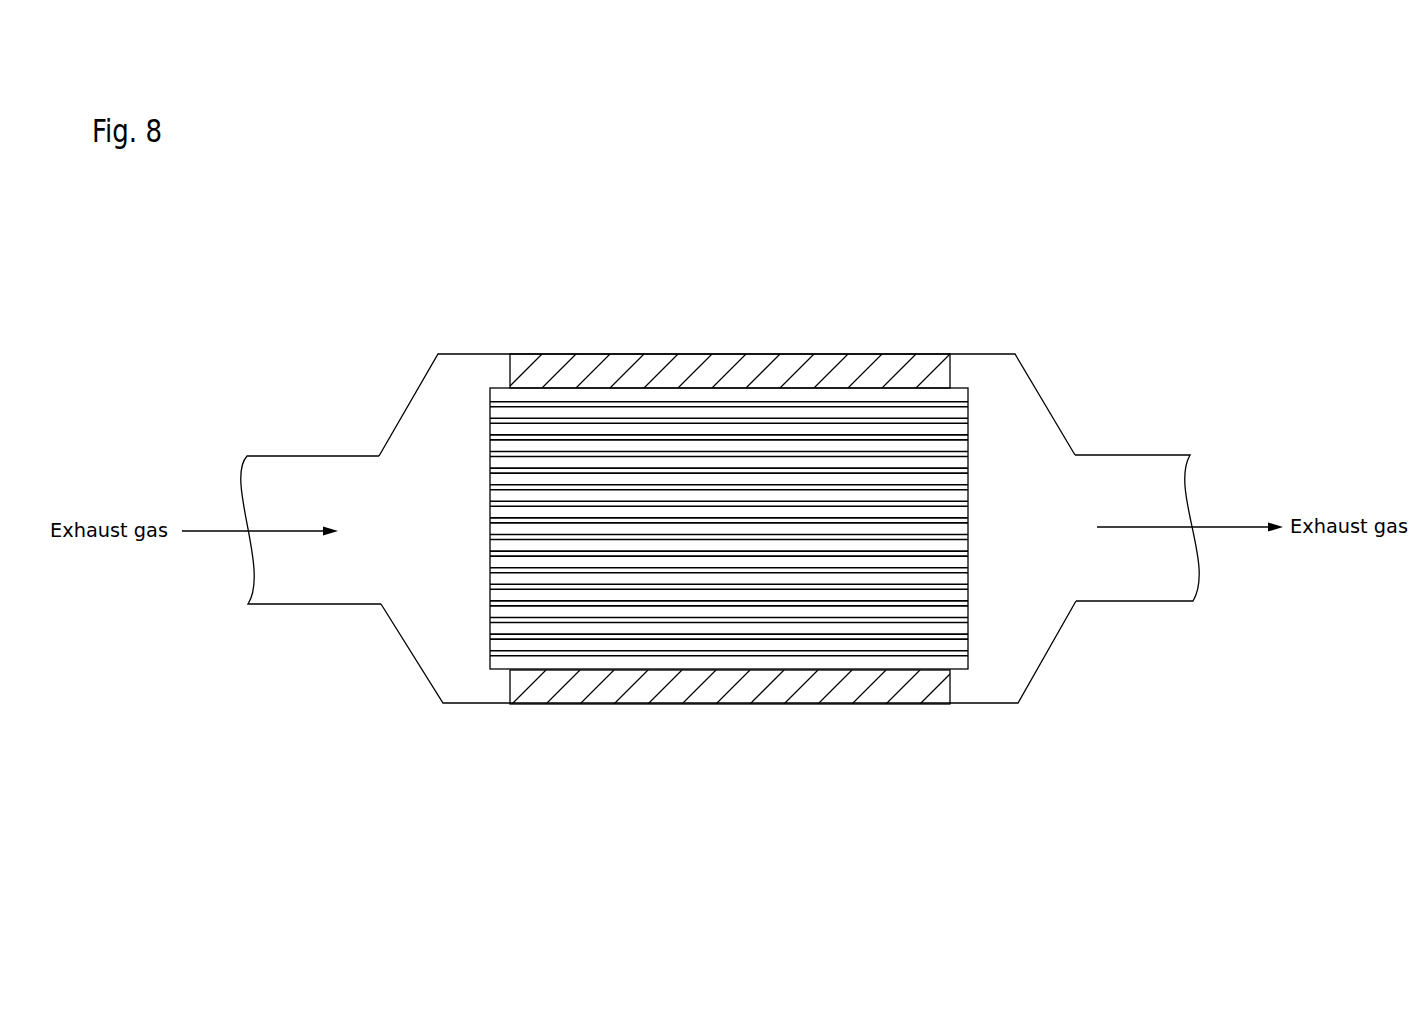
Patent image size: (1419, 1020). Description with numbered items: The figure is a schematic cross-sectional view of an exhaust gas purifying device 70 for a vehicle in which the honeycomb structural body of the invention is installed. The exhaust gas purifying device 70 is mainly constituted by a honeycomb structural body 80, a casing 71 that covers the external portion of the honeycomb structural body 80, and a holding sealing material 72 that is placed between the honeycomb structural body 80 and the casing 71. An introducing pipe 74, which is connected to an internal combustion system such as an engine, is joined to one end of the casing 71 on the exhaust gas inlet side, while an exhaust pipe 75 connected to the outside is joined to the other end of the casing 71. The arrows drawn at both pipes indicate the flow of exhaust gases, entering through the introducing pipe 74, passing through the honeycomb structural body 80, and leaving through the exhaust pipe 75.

The exhaust gas purifying device 70 is at (866, 257).
The casing 71 is at (993, 705).
The holding sealing material 72 is at (600, 365).
The introducing pipe 74 is at (262, 475).
The exhaust pipe 75 is at (1158, 482).
The honeycomb structural body 80 is at (984, 427).